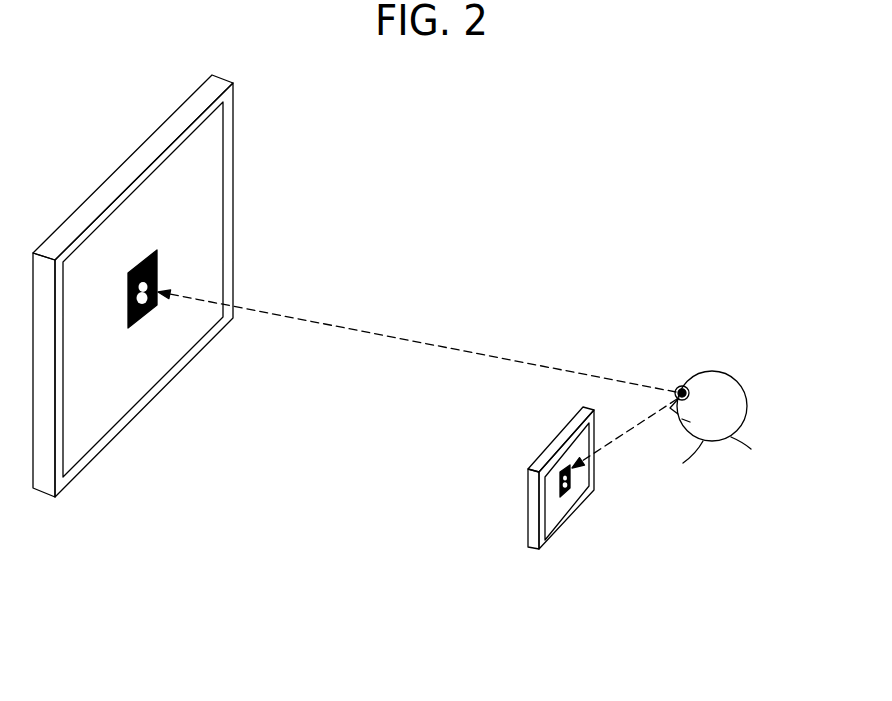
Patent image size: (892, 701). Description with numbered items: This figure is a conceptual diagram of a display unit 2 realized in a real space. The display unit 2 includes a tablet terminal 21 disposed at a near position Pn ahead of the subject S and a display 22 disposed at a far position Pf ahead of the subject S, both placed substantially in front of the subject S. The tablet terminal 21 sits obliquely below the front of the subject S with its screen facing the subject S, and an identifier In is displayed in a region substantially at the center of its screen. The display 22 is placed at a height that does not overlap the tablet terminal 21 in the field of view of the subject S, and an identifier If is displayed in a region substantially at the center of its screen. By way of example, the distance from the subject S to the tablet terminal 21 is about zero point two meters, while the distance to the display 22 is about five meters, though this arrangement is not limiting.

The display unit 2 is at (586, 570).
The display 22 is at (127, 160).
The tablet terminal 21 is at (528, 488).
The far position Pf is at (133, 311).
The near position Pn is at (553, 502).
The identifier If is at (150, 305).
The identifier In is at (580, 490).
The subject S is at (740, 383).